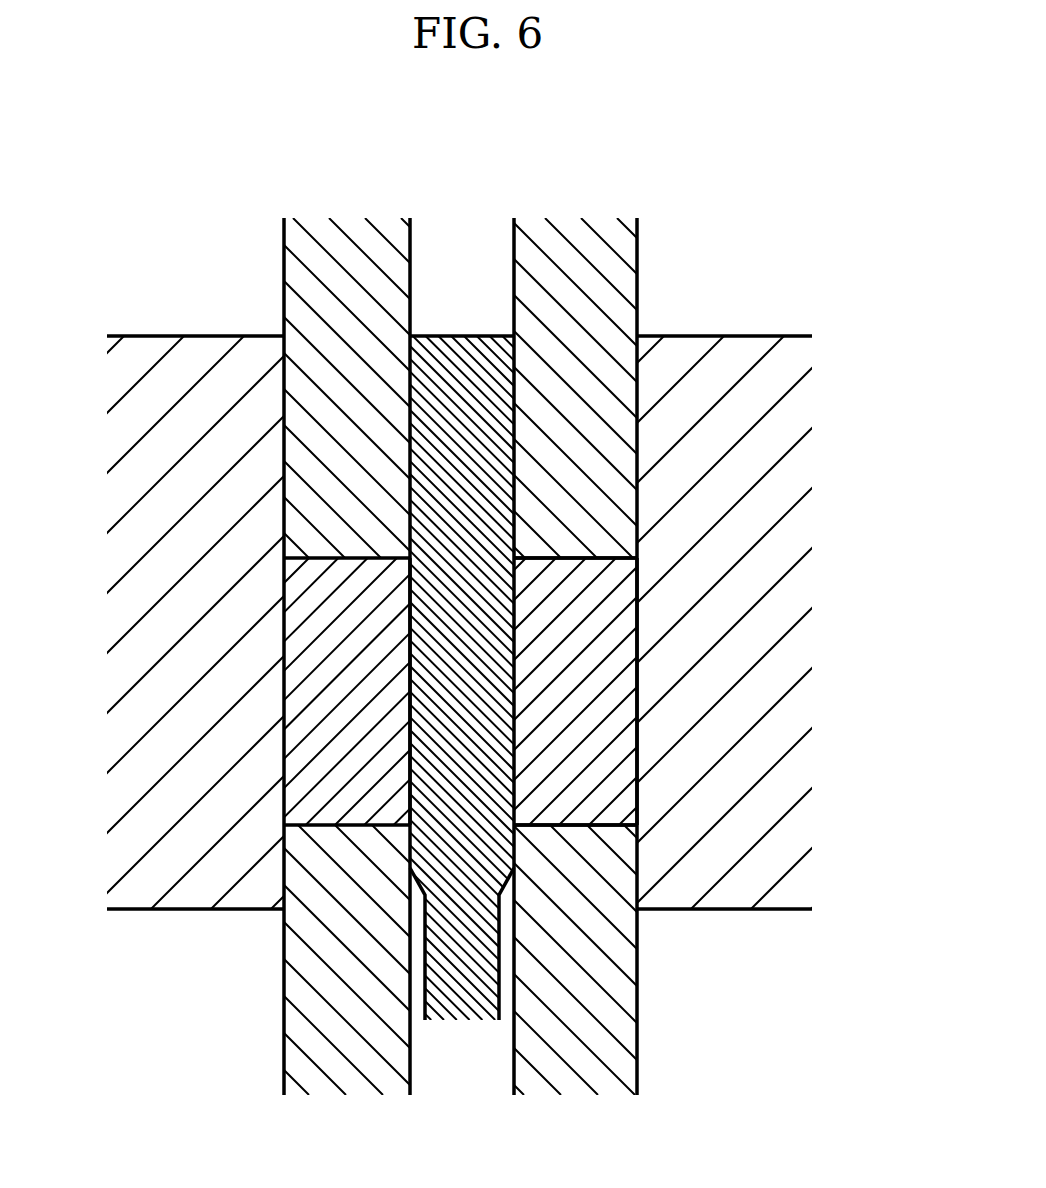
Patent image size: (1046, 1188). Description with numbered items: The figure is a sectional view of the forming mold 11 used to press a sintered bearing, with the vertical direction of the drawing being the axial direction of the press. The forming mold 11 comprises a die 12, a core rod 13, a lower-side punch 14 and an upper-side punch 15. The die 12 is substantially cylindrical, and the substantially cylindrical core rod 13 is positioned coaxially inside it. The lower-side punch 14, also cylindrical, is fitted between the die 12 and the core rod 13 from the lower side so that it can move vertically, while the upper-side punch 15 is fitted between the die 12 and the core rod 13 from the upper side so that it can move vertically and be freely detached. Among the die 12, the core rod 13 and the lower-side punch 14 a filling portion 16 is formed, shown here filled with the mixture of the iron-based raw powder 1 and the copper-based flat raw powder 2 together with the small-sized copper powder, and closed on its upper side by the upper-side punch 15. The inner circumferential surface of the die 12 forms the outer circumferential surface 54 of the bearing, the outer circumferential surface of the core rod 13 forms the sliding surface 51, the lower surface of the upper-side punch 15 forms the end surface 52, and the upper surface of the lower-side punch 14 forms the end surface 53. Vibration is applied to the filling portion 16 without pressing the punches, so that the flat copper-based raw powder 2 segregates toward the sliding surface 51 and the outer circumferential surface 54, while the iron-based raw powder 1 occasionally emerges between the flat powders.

The iron-based raw powder 1 is at (463, 691).
The copper-based flat raw powder 2 is at (307, 749).
The forming mold 11 is at (523, 603).
The die 12 is at (770, 608).
The core rod 13 is at (466, 352).
The lower-side punch 14 is at (552, 968).
The upper-side punch 15 is at (335, 256).
The filling portion 16 is at (327, 655).
The sliding surface 51 is at (410, 700).
The end surface 52 is at (603, 556).
The end surface 53 is at (597, 827).
The outer circumferential surface 54 is at (638, 738).